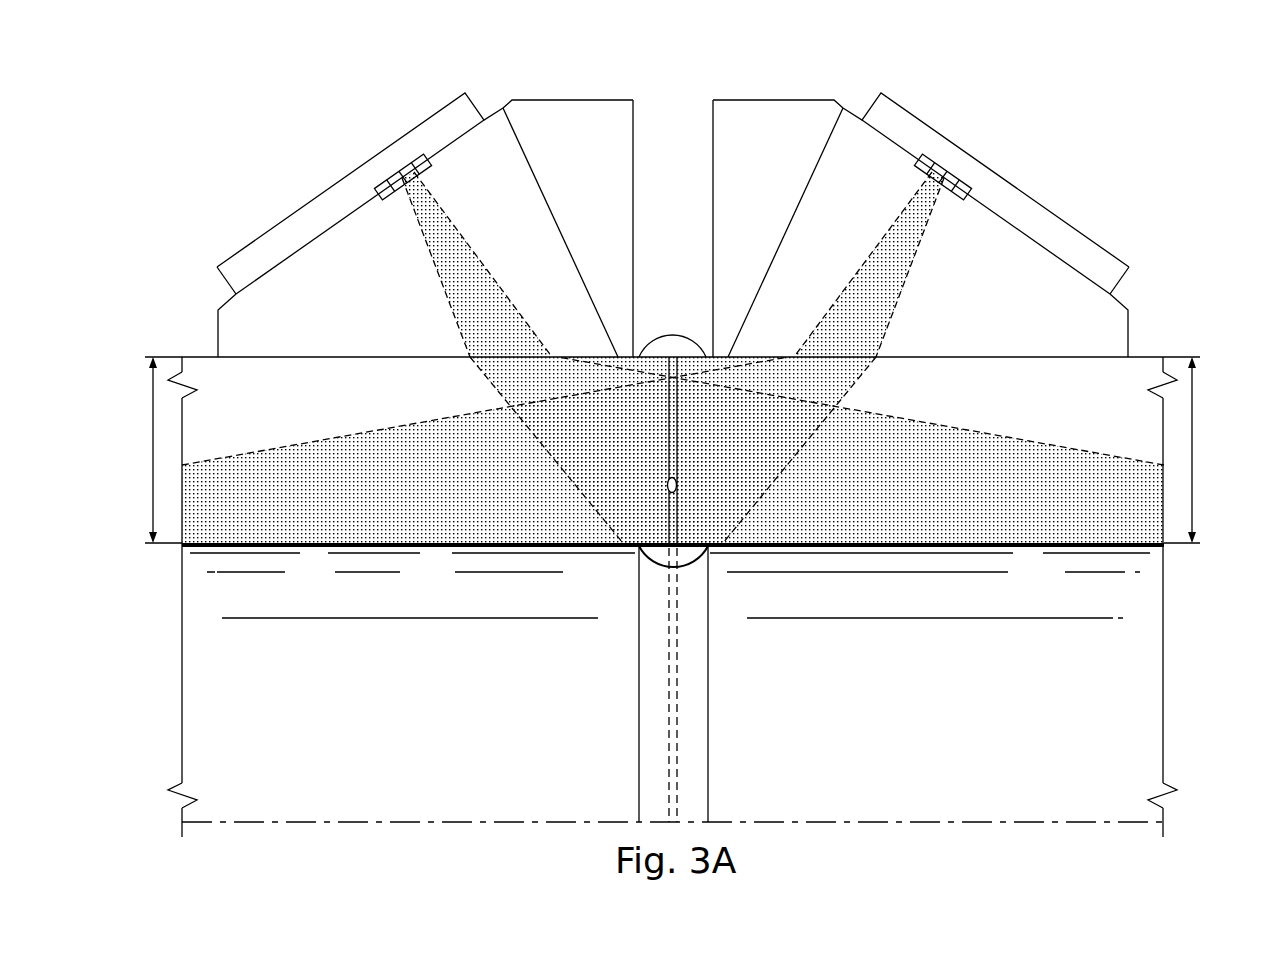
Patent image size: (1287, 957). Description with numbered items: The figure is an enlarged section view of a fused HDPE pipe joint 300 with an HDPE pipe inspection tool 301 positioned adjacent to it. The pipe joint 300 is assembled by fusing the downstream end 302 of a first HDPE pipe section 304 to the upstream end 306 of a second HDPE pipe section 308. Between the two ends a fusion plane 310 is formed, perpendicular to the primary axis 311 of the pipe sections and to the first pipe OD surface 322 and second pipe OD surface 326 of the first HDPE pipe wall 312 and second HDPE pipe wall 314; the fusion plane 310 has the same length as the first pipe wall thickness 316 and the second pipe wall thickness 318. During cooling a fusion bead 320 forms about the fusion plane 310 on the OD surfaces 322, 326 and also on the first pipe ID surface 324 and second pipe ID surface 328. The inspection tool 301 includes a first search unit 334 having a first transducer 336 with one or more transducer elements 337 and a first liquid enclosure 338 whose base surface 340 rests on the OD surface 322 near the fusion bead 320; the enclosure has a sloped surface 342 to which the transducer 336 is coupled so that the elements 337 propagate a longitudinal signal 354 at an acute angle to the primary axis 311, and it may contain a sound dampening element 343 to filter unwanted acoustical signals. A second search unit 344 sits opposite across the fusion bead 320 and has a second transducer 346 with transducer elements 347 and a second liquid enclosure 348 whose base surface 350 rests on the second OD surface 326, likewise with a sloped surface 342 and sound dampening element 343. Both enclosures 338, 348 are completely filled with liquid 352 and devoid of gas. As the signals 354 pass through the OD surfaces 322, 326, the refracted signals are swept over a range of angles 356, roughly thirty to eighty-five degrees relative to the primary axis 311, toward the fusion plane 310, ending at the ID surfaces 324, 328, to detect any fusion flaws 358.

The fused HDPE pipe joint 300 is at (610, 775).
The HDPE pipe inspection tool 301 is at (200, 95).
The downstream end 302 is at (669, 688).
The first HDPE pipe section 304 is at (320, 548).
The upstream end 306 is at (676, 653).
The second HDPE pipe section 308 is at (1025, 548).
The fusion plane 310 is at (676, 722).
The primary axis 311 is at (898, 822).
The first HDPE pipe wall 312 is at (422, 395).
The second HDPE pipe wall 314 is at (964, 394).
The first HDPE pipe wall thickness 316 is at (150, 455).
The second HDPE pipe wall thickness 318 is at (1195, 455).
The fusion bead 320 is at (650, 562).
The first pipe OD surface 322 is at (357, 357).
The first pipe ID surface 324 is at (438, 548).
The second pipe OD surface 326 is at (988, 357).
The second pipe ID surface 328 is at (908, 548).
The first search unit 334 is at (322, 213).
The first transducer 336 is at (306, 202).
The transducer elements 337 is at (388, 150).
The first liquid enclosure 338 is at (205, 330).
The base surface 340 is at (267, 352).
The sloped surface 342 is at (492, 108).
The sound dampening element 343 is at (574, 108).
The second search unit 344 is at (1025, 211).
The second transducer 346 is at (1040, 202).
The transducer elements 347 is at (957, 152).
The second liquid enclosure 348 is at (1140, 330).
The base surface 350 is at (1078, 352).
The liquid 352 is at (360, 286).
The longitudinal signal 354 is at (447, 292).
The range of angles 356 is at (352, 433).
The fusion flaws 358 is at (680, 483).